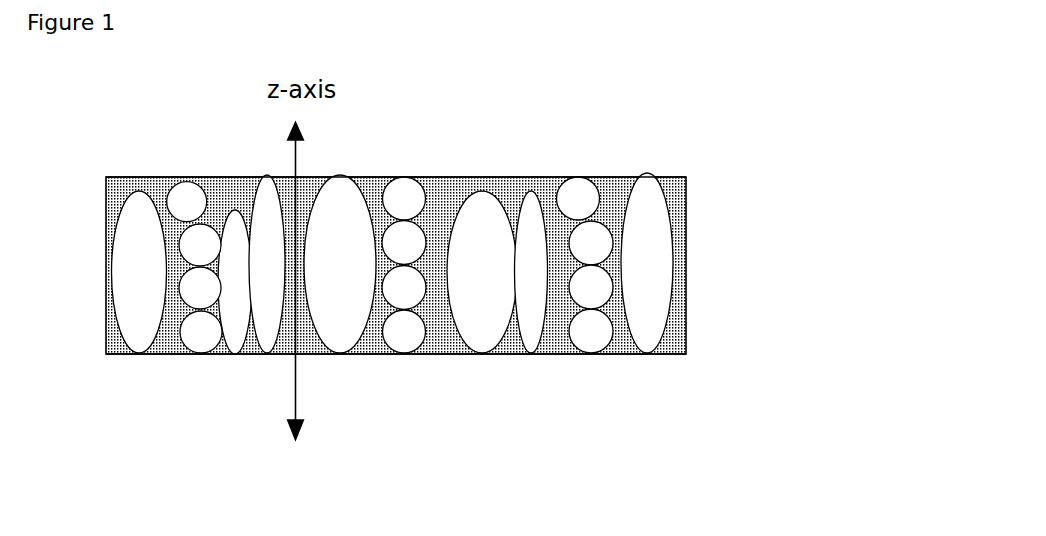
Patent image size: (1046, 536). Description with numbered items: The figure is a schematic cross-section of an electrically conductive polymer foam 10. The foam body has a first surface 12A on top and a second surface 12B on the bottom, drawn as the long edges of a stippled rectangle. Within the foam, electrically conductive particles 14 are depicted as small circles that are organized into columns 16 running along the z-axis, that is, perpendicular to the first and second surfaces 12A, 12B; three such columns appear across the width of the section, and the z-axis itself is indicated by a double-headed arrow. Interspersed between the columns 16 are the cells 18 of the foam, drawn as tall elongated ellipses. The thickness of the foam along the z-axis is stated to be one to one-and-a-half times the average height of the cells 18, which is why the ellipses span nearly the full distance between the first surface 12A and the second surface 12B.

The electrically conductive polymer foam 10 is at (745, 168).
The first surface 12A is at (499, 177).
The second surface 12B is at (498, 354).
The electrically conductive particles 14 is at (598, 293).
The columns 16 is at (199, 365).
The cells 18 is at (237, 228).